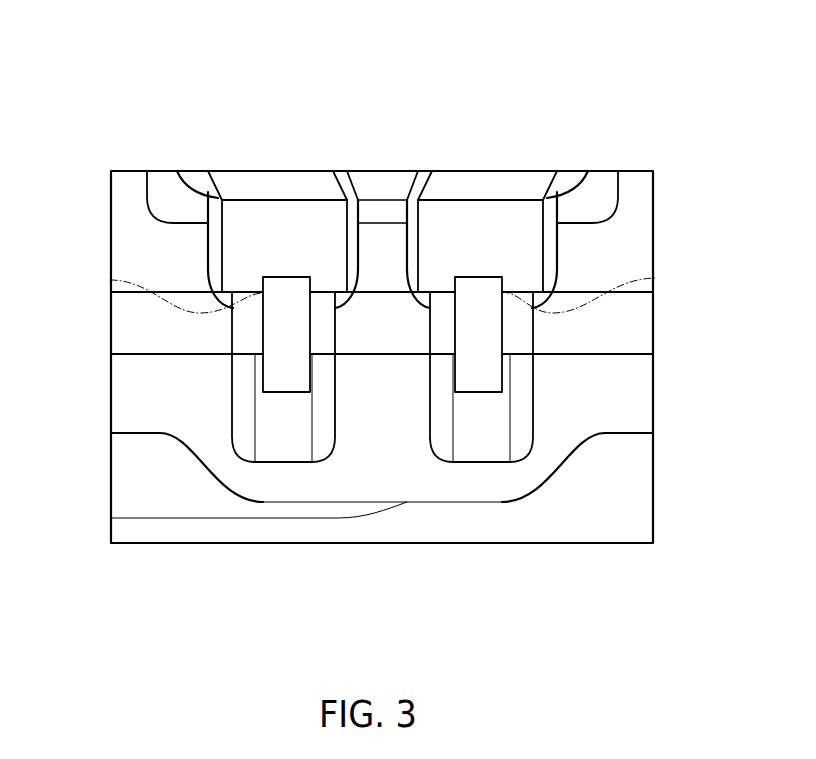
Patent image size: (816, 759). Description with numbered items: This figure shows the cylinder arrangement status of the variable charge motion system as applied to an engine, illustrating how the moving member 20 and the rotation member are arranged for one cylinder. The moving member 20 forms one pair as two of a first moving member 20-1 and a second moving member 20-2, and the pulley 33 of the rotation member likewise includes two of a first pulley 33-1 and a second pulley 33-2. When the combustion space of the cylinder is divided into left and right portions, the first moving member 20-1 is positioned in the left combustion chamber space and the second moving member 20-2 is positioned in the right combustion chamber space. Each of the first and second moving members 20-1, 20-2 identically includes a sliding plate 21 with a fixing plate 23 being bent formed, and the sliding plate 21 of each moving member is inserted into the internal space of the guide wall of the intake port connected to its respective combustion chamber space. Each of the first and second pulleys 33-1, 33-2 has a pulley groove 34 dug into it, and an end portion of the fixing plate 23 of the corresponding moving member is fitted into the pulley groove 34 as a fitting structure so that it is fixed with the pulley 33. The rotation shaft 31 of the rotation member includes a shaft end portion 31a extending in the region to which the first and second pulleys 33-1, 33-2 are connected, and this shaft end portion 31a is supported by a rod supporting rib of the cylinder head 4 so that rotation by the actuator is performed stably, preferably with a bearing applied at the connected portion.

The cylinder head 4 is at (638, 414).
The moving member 20 is at (382, 115).
The first moving member 20-1 is at (228, 110).
The second moving member 20-2 is at (434, 110).
The sliding plate 21 is at (448, 184).
The fixing plate 23 is at (512, 217).
The rotation shaft 31 is at (628, 325).
The shaft end portion 31a is at (138, 328).
The pulley 33 is at (382, 461).
The first pulley 33-1 is at (292, 372).
The second pulley 33-2 is at (477, 373).
The pulley groove 34 is at (672, 278).